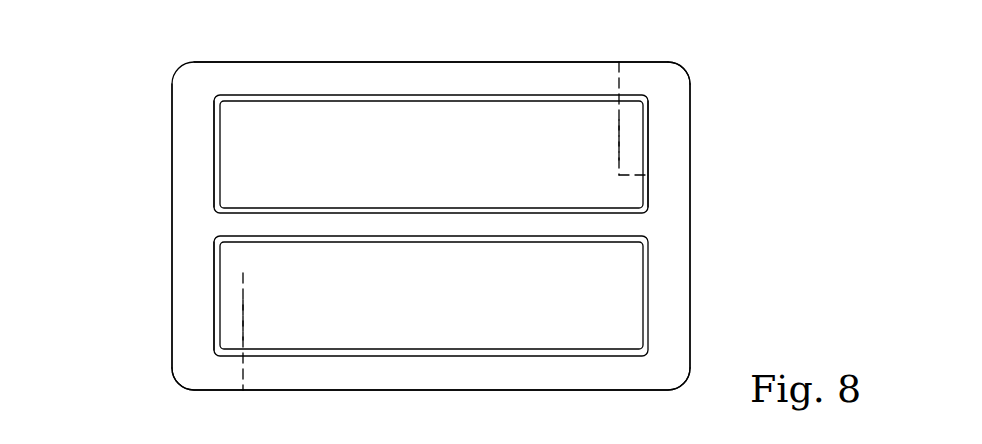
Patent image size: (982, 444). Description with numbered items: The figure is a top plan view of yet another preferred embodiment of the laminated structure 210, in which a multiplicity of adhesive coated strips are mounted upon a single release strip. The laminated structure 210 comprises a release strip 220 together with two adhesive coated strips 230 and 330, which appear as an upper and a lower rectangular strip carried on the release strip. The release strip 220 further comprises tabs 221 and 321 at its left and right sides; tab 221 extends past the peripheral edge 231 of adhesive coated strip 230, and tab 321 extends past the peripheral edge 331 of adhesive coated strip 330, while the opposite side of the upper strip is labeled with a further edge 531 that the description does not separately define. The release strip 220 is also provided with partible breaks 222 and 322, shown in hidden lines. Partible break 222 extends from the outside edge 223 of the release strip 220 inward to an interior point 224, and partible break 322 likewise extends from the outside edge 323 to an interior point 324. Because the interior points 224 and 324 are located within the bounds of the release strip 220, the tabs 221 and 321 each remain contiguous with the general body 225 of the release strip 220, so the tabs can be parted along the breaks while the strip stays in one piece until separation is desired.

The laminated structure 210 is at (518, 30).
The release strip 220 is at (252, 61).
The tab 221 is at (172, 307).
The partible break 222 is at (243, 323).
The outside edge 223 is at (227, 390).
The interior point 224 is at (243, 273).
The general body 225 is at (587, 390).
The adhesive coated strip 230 is at (643, 298).
The peripheral edge 231 is at (213, 283).
The tab 321 is at (687, 80).
The partible break 322 is at (619, 142).
The outside edge 323 is at (638, 62).
The interior point 324 is at (648, 175).
The adhesive coated strip 330 is at (302, 102).
The peripheral edge 331 is at (648, 192).
The upper opening left wall 531 is at (213, 152).